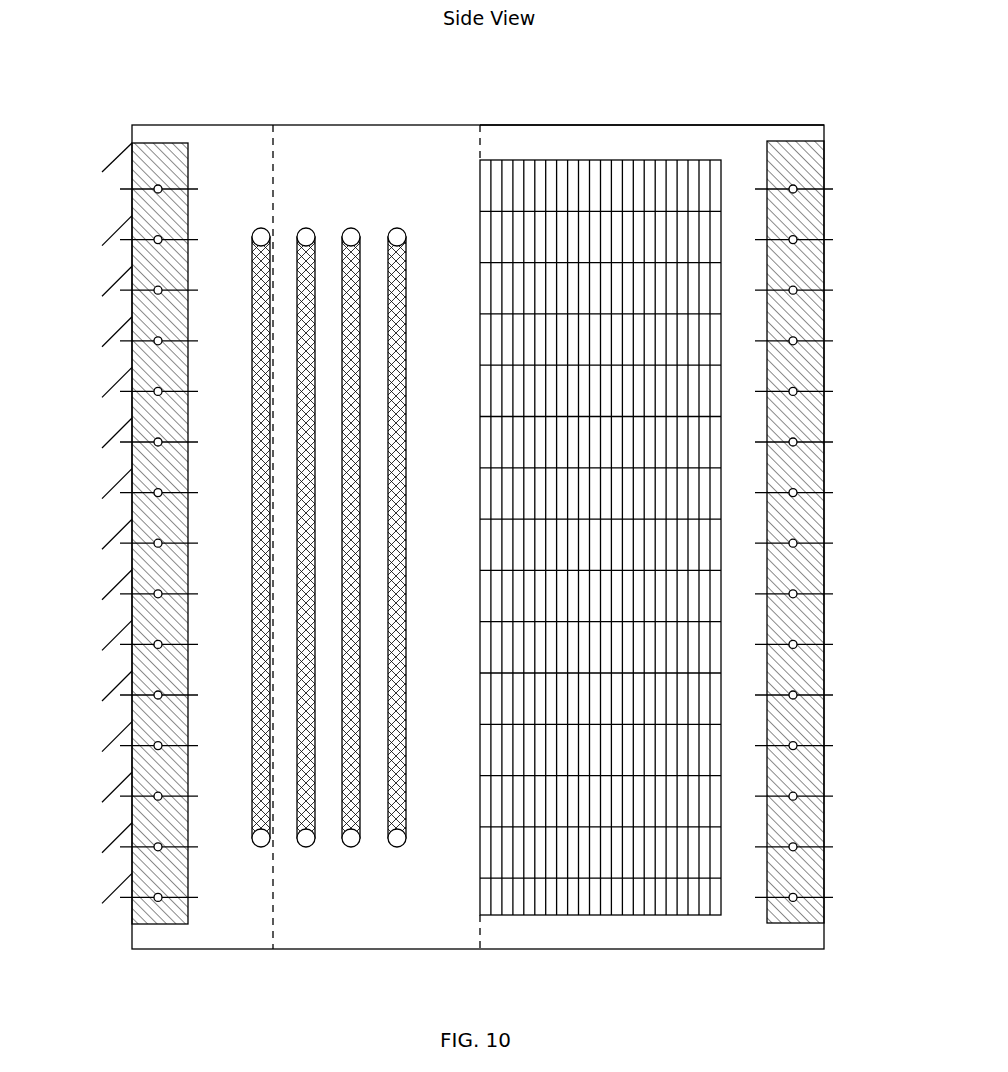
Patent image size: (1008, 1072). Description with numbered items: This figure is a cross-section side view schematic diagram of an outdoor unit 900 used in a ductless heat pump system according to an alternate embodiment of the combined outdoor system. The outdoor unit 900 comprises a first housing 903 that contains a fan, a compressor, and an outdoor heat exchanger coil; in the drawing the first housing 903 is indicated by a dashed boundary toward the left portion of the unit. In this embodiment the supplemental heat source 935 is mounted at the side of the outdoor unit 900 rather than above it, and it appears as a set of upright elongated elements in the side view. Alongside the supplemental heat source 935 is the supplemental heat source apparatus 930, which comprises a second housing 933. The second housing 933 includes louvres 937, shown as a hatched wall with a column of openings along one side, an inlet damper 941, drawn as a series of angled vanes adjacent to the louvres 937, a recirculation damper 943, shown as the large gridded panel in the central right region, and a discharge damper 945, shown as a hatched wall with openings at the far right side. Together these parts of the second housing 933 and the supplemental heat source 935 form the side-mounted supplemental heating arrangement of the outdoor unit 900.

The outdoor unit 900 is at (365, 105).
The first housing 903 is at (320, 125).
The supplemental heat source apparatus 930 is at (541, 106).
The second housing 933 is at (662, 125).
The supplemental heat source 935 is at (351, 230).
The louvres 937 is at (117, 334).
The inlet damper 941 is at (125, 395).
The recirculation damper 943 is at (700, 160).
The discharge damper 945 is at (828, 237).